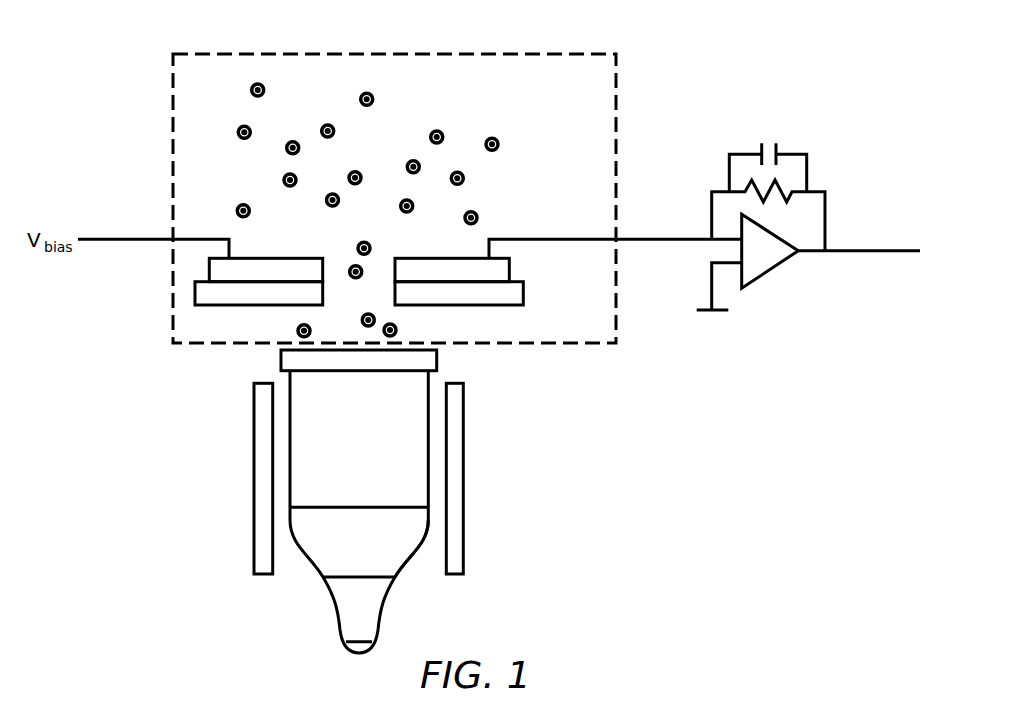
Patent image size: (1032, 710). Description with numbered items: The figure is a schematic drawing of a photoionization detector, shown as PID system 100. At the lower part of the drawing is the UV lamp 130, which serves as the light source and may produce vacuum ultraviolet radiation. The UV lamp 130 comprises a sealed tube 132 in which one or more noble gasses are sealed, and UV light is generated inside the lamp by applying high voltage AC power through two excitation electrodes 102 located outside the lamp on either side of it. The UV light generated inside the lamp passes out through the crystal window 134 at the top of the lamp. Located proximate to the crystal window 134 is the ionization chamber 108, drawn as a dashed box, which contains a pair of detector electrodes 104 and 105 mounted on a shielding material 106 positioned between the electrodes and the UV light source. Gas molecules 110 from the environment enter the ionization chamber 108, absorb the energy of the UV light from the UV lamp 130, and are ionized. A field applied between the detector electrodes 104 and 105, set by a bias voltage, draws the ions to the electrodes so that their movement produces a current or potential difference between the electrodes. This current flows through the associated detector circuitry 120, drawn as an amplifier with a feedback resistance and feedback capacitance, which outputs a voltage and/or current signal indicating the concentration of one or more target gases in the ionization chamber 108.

The PID system 100 is at (142, 125).
The excitation electrodes 102 is at (253, 429).
The detector electrode 104 is at (208, 263).
The detector electrode 105 is at (510, 264).
The shielding material 106 is at (195, 291).
The ionization chamber 108 is at (545, 53).
The gas molecules 110 is at (366, 224).
The detector circuitry 120 is at (782, 285).
The UV lamp 130 is at (308, 612).
The sealed tube 132 is at (407, 562).
The crystal window 134 is at (280, 357).